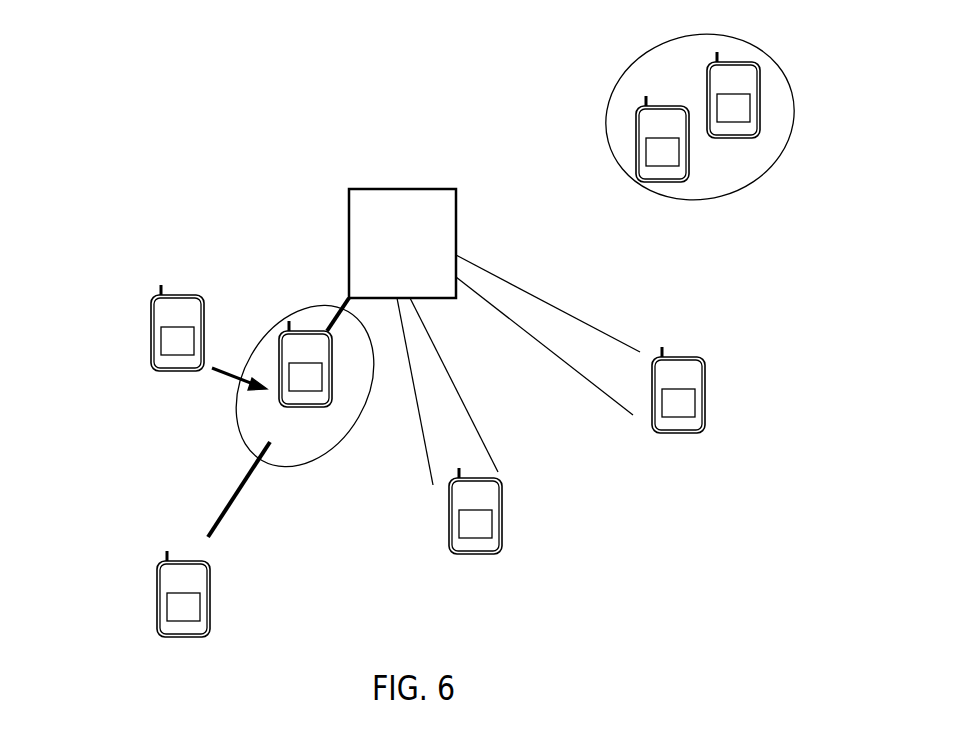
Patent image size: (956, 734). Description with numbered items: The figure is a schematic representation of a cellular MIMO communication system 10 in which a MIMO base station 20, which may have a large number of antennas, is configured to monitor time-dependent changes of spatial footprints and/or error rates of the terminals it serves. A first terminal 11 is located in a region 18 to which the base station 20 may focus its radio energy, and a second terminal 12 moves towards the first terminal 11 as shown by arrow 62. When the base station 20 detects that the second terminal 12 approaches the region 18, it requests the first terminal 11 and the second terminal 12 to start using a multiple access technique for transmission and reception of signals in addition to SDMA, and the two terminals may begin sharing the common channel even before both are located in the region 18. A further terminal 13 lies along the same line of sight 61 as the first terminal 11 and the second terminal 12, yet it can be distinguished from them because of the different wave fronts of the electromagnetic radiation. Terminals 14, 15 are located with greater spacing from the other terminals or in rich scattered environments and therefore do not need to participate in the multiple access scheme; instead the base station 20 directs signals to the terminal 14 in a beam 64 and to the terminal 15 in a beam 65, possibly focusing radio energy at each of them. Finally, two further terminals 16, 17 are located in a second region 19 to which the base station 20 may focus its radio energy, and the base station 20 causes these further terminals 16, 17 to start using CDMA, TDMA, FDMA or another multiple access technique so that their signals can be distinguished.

The communication system 10 is at (112, 187).
The MIMO base station 20 is at (349, 191).
The first terminal 11 is at (280, 404).
The second terminal 12 is at (155, 371).
The terminal 13 is at (158, 636).
The terminal 14 is at (450, 553).
The terminal 15 is at (653, 431).
The further terminal 16 is at (637, 180).
The further terminal 17 is at (759, 65).
The region 18 is at (320, 458).
The region 19 is at (737, 184).
The line of sight 61 is at (233, 502).
The arrow 62 is at (216, 374).
The beam 64 is at (425, 456).
The beam 65 is at (555, 308).